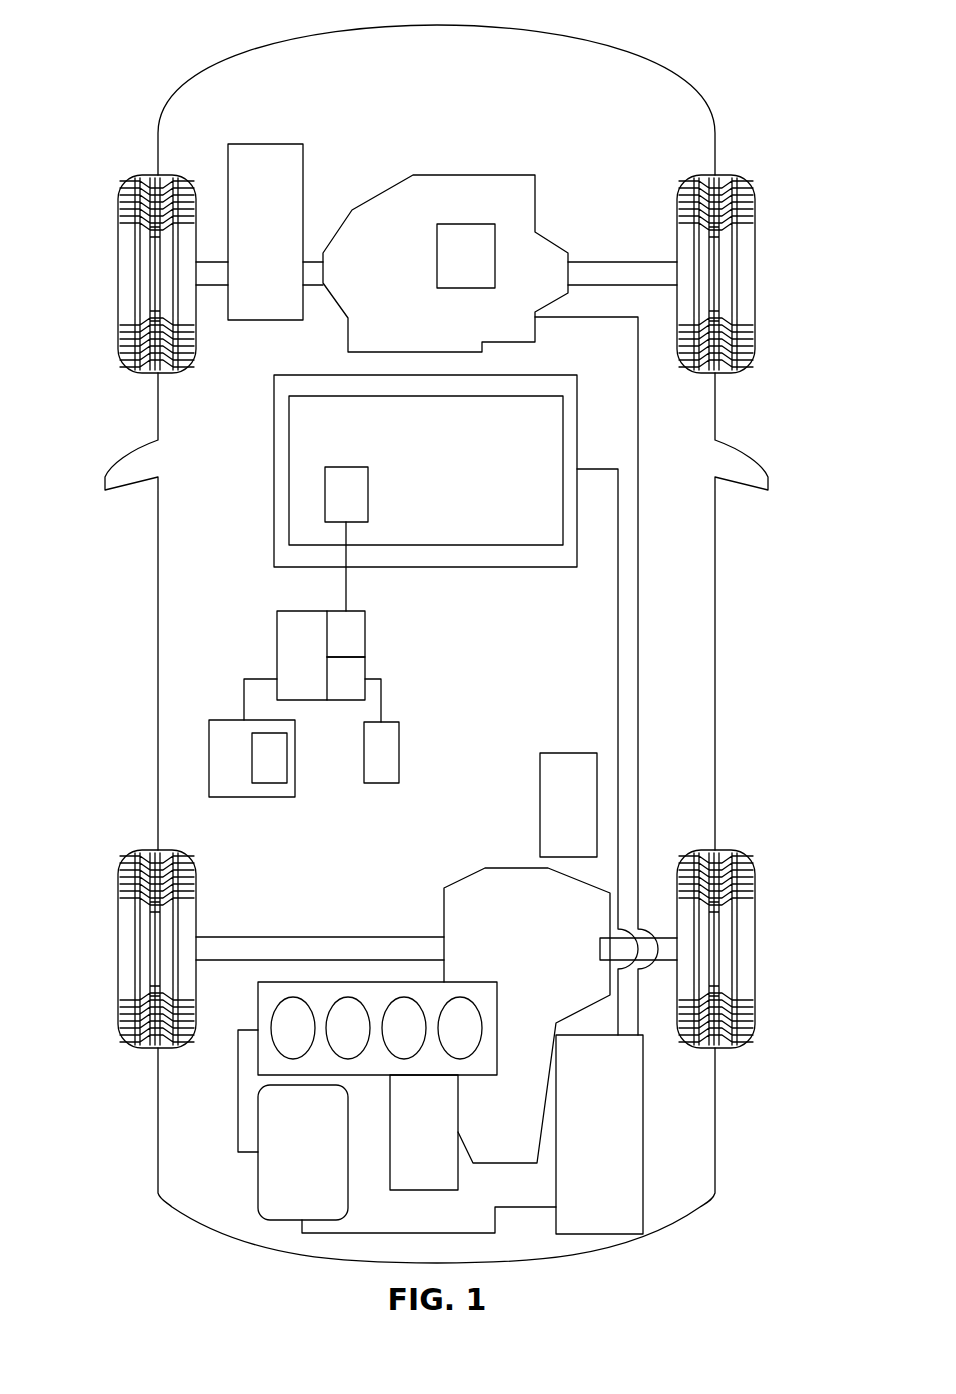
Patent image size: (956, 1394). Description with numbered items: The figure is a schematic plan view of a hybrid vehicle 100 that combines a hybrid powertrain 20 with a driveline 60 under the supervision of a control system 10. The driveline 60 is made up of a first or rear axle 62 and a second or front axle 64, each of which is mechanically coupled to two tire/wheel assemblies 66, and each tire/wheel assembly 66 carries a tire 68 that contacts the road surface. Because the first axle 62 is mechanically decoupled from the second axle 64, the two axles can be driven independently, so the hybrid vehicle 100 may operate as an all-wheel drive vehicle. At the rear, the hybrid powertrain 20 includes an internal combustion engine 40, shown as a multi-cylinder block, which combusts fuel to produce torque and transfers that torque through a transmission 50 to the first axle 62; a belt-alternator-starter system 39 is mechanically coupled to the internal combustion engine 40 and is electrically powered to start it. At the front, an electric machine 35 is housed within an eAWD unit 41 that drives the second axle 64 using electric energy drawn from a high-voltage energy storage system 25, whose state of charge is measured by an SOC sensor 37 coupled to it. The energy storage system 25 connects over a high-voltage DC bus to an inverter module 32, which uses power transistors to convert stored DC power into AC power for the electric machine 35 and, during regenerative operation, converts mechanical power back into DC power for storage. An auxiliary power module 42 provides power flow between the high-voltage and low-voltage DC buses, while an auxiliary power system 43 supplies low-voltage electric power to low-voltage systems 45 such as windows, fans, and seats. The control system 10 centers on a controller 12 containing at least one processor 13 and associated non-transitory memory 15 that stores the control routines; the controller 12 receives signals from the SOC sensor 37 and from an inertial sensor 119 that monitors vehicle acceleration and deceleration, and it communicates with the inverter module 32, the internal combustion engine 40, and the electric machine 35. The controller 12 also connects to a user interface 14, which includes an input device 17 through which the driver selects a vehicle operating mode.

The hybrid vehicle 100 is at (145, 45).
The tire/wheel assembly 66 is at (116, 222).
The tire 68 is at (125, 300).
The auxiliary power module 42 is at (249, 245).
The eAWD unit 41 is at (385, 192).
The electric machine 35 is at (467, 223).
The second axle 64 is at (612, 262).
The energy storage system 25 is at (409, 485).
The SOC sensor 37 is at (331, 507).
The control system 10 is at (262, 640).
The controller 12 is at (286, 670).
The non-transitory memory 15 is at (357, 633).
The processor 13 is at (357, 672).
The user interface 14 is at (211, 768).
The input device 17 is at (267, 774).
The inertial sensor 119 is at (380, 770).
The auxiliary power system 43 is at (551, 815).
The transmission 50 is at (511, 868).
The first axle 62 is at (258, 937).
The driveline 60 is at (295, 935).
The internal combustion engine 40 is at (256, 1012).
The hybrid powertrain 20 is at (183, 822).
The belt-alternator-starter system 39 is at (286, 1165).
The low-voltage systems 45 is at (406, 1145).
The inverter module 32 is at (583, 1135).